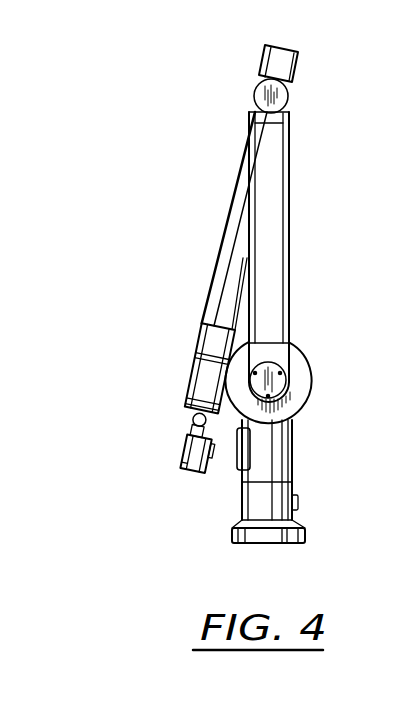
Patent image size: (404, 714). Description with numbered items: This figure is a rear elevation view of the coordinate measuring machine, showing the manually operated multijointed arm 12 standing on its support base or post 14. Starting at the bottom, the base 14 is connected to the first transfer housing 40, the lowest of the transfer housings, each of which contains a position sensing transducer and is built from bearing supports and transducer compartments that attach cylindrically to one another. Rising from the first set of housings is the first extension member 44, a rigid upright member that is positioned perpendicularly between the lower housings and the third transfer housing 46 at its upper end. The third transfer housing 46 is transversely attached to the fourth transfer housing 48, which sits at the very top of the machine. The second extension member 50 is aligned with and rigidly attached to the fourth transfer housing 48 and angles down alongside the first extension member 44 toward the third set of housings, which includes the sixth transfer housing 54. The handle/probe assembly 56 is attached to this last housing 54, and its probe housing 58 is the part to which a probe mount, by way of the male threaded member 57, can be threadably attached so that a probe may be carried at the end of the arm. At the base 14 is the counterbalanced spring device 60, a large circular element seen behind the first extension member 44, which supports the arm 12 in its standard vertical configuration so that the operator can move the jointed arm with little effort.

The multijointed arm 12 is at (327, 222).
The support base 14 is at (289, 488).
The first transfer housing 40 is at (293, 448).
The first extension member 44 is at (291, 257).
The third transfer housing 46 is at (281, 93).
The fourth transfer housing 48 is at (261, 63).
The second extension member 50 is at (217, 253).
The sixth transfer housing 54 is at (193, 368).
The handle/probe assembly 56 is at (197, 478).
The pivot pin 57 is at (191, 421).
The probe housing 58 is at (189, 432).
The counterbalanced spring device 60 is at (313, 398).